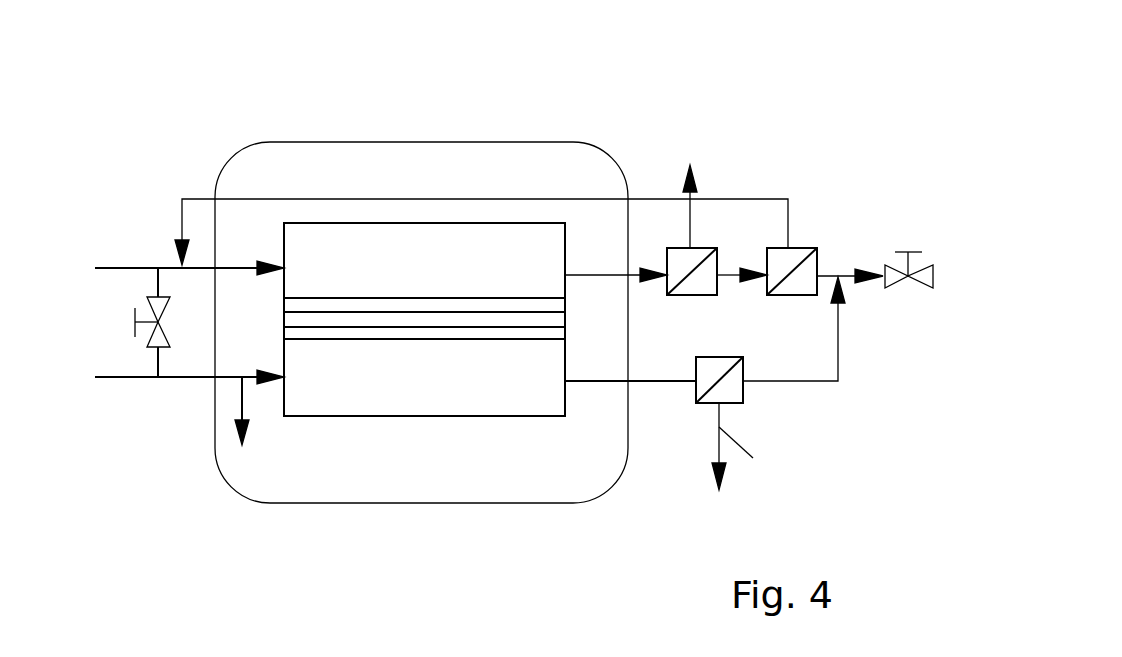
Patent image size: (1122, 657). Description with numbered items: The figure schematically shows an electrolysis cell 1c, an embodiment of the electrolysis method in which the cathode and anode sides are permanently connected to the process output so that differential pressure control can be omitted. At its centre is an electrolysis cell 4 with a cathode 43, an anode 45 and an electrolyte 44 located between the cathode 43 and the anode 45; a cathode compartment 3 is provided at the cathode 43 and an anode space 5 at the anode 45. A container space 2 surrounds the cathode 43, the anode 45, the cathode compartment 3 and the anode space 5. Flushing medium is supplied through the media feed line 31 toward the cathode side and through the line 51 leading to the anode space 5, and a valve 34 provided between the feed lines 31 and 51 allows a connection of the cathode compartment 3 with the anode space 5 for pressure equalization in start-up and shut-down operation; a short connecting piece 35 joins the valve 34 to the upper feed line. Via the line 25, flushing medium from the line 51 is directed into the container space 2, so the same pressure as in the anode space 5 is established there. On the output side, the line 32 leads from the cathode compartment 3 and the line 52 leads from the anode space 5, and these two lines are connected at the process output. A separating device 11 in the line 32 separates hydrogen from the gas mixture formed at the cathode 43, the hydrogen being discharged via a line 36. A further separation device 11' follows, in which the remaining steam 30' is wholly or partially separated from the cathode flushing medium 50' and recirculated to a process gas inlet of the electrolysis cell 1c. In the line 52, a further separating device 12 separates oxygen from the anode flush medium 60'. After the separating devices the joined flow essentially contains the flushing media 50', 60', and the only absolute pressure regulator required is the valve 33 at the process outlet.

The electrolysis cell 1c is at (895, 80).
The container space 2 is at (543, 468).
The cathode compartment 3 is at (395, 240).
The electrolysis cell 4 is at (436, 274).
The anode space 5 is at (477, 392).
The cathode 43 is at (300, 303).
The electrolyte 44 is at (368, 317).
The anode 45 is at (429, 332).
The media feed line 31 is at (148, 267).
The connecting line 35 is at (155, 287).
The valve 34 is at (148, 340).
The line 51 is at (137, 378).
The line 25 is at (242, 403).
The steam 30' is at (481, 200).
The line 32 is at (592, 275).
The separating device 11 is at (728, 219).
The line 36 is at (692, 223).
The further separation device 11' is at (814, 215).
The cathode flushing medium 50' is at (850, 241).
The valve 33 is at (890, 267).
The line 52 is at (602, 383).
The further separating device 12 is at (692, 405).
The anode flush medium 60' is at (794, 366).